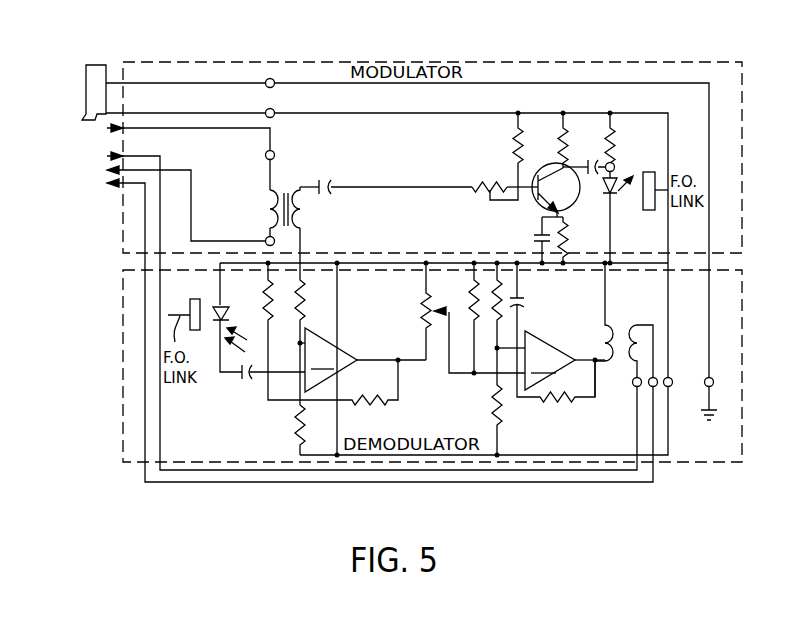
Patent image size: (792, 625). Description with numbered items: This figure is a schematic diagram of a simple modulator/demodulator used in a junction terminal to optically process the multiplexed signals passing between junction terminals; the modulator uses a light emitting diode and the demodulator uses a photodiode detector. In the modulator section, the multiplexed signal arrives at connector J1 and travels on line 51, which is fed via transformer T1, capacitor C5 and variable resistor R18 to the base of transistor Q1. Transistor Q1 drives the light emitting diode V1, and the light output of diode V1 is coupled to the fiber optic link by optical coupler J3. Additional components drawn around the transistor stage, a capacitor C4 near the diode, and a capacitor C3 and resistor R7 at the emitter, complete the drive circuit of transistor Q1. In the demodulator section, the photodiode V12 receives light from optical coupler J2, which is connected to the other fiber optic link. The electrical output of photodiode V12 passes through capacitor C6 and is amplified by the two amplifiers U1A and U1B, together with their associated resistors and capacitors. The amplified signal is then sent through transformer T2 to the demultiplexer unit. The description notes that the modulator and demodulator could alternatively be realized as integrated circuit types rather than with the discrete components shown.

The input connector J1 is at (94, 83).
The line 51 is at (241, 130).
The transformer T1 is at (296, 180).
The capacitor C5 is at (395, 180).
The variable resistor R18 is at (489, 178).
The transistor Q1 is at (535, 192).
The capacitor C4 is at (591, 177).
The light emitting diode V1 is at (613, 217).
The optical coupler J3 is at (645, 203).
The capacitor C3 is at (526, 240).
The resistor R7 is at (574, 240).
The optical coupler J2 is at (184, 310).
The photodiode V12 is at (231, 323).
The capacitor C6 is at (245, 382).
The amplifier U1A is at (331, 355).
The amplifier U1B is at (550, 360).
The transformer T2 is at (641, 320).